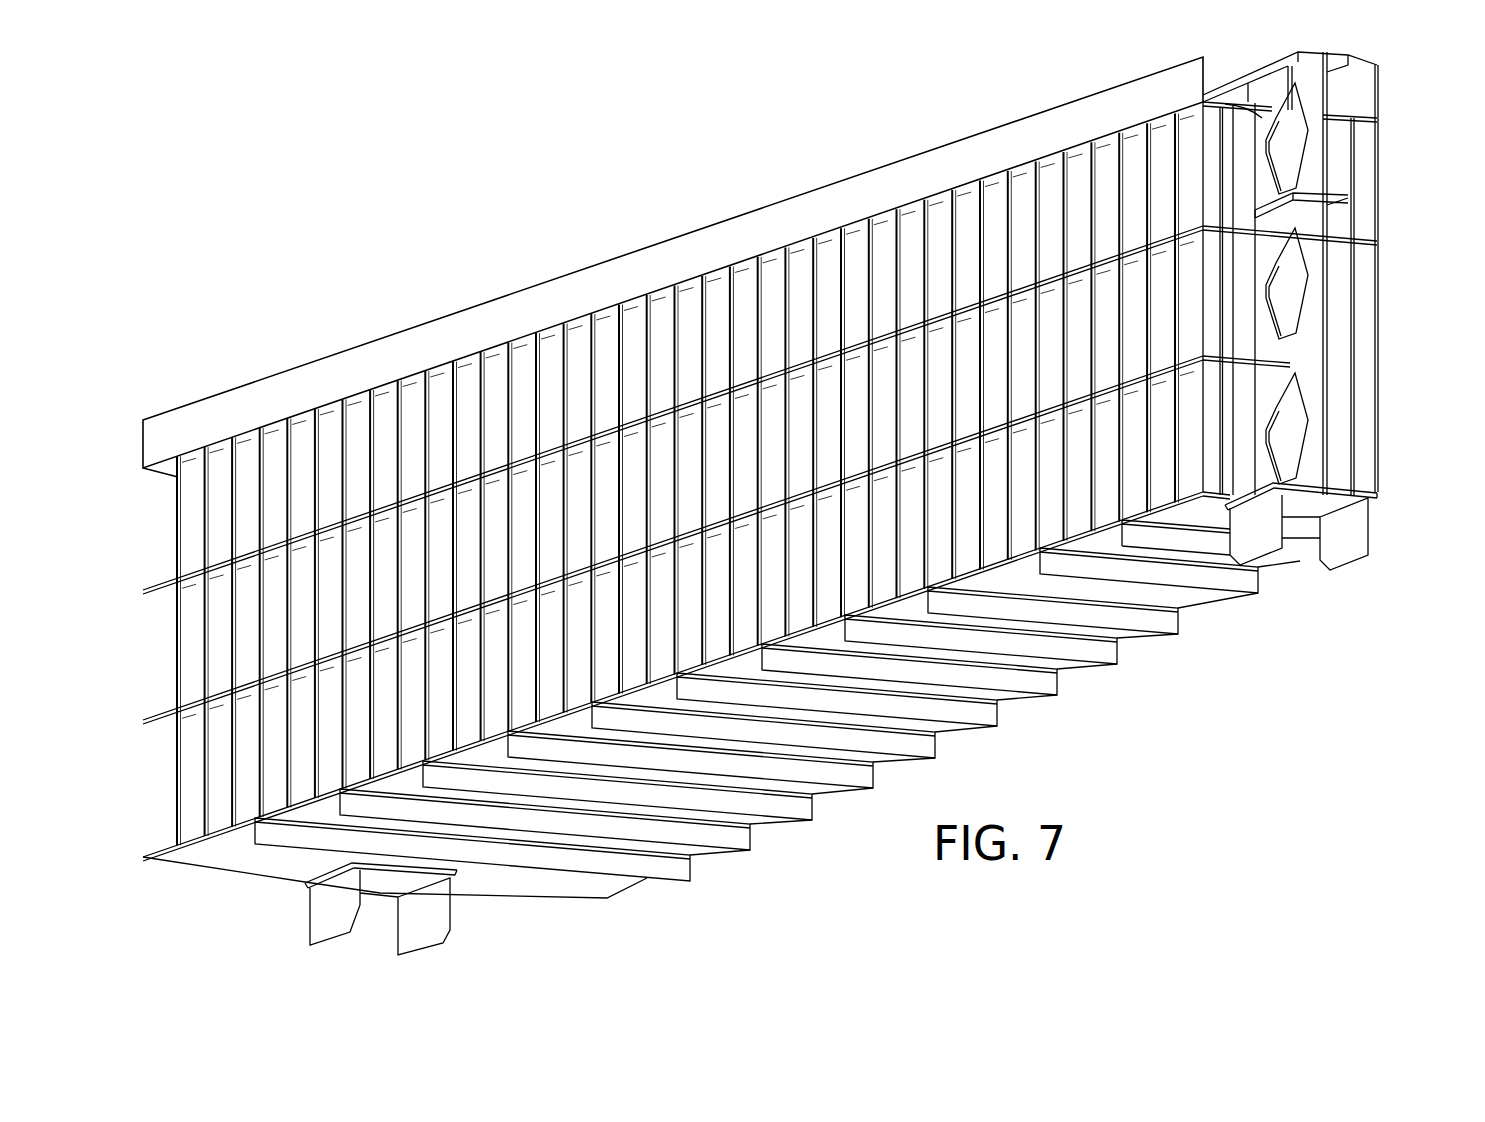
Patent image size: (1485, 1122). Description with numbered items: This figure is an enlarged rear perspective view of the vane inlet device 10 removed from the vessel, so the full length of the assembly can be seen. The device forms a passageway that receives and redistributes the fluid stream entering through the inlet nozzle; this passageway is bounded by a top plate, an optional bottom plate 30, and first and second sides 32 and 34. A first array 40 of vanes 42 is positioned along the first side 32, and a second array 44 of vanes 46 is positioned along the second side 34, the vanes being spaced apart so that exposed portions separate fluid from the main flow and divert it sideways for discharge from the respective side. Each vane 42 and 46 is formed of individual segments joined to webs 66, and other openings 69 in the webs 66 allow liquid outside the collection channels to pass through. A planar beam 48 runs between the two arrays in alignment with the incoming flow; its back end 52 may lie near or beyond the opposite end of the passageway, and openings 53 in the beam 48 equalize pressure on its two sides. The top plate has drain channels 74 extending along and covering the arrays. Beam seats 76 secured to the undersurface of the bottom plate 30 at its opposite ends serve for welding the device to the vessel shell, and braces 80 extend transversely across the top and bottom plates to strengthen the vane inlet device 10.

The vane inlet device 10 is at (709, 206).
The bottom plate 30 is at (1190, 605).
The first side 32 is at (1377, 165).
The second side 34 is at (880, 232).
The first array 40 is at (1337, 272).
The vanes 42 is at (1368, 224).
The second array 44 is at (1071, 162).
The vanes 46 is at (965, 210).
The planar beam 48 is at (1312, 153).
The back end 52 is at (1325, 148).
The opening 53 is at (1300, 255).
The webs 66 is at (152, 598).
The openings 69 is at (530, 343).
The drain channels 74 is at (1350, 118).
The beam seats 76 is at (1345, 553).
The braces 80 is at (660, 868).